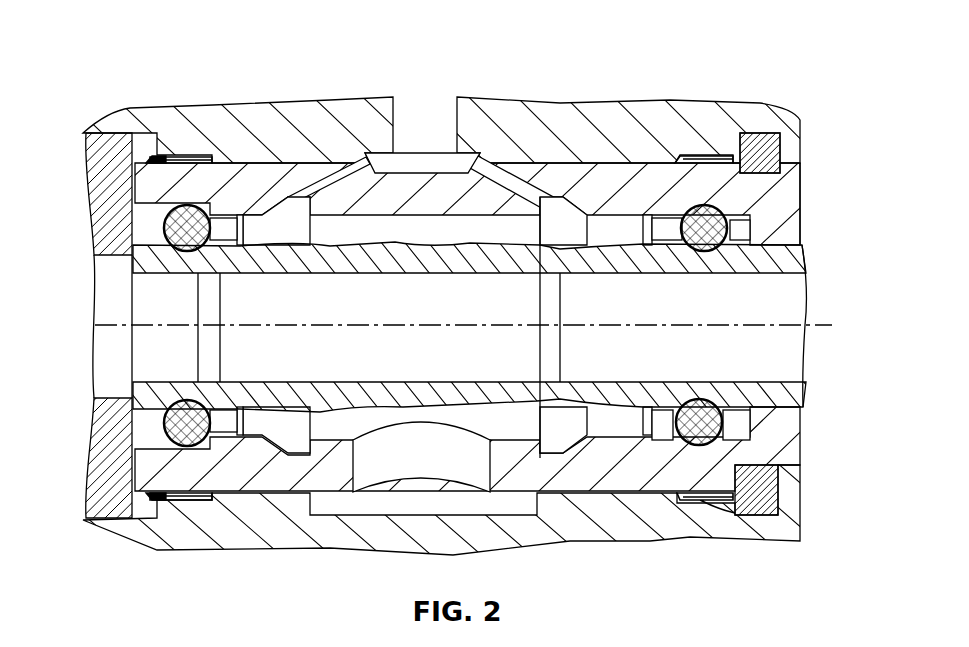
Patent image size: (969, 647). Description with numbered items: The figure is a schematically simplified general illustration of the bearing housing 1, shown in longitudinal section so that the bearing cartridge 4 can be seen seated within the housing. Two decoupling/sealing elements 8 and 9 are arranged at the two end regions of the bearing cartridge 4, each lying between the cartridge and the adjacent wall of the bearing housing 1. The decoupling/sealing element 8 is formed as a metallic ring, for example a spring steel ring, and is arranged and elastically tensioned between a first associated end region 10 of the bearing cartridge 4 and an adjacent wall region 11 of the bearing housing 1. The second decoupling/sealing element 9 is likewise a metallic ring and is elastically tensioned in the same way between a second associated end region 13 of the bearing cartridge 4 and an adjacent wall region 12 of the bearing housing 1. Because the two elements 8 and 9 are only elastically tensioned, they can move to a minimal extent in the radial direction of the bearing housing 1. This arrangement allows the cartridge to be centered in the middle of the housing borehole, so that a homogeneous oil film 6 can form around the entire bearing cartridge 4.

The bearing housing 1 is at (582, 98).
The bearing cartridge 4 is at (760, 191).
The oil film 6 is at (321, 162).
The decoupling/sealing element 8 is at (177, 153).
The decoupling/sealing element 9 is at (717, 155).
The first end region 10 is at (142, 187).
The wall region 11 is at (165, 156).
The wall region 12 is at (765, 112).
The second end region 13 is at (795, 193).